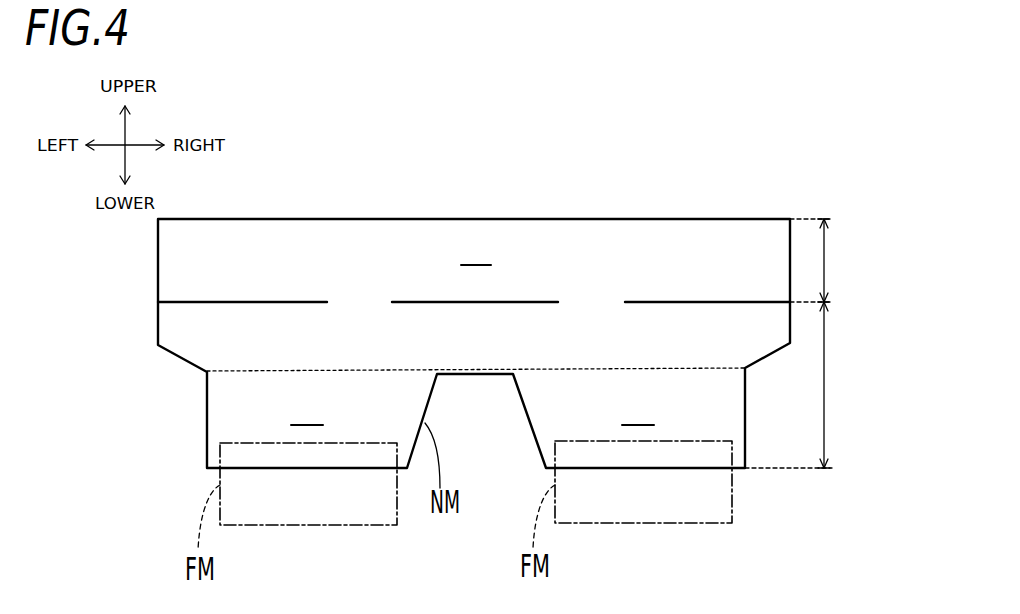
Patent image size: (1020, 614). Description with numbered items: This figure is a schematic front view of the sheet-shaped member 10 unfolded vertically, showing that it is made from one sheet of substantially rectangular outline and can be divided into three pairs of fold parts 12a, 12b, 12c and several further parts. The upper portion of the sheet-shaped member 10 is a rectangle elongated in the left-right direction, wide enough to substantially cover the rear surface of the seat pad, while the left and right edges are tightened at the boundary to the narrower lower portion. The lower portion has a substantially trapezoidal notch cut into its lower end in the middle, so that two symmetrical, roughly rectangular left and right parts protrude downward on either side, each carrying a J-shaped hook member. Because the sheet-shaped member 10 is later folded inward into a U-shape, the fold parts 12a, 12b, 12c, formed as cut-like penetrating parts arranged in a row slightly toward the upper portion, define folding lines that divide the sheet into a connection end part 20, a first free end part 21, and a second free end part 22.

The sheet-shaped member 10 is at (773, 168).
The fold part 12a is at (705, 302).
The fold part 12b is at (520, 302).
The fold part 12c is at (242, 302).
The connection end part 20 is at (836, 304).
The first free end part 21 is at (826, 385).
The second free end part 22 is at (826, 256).